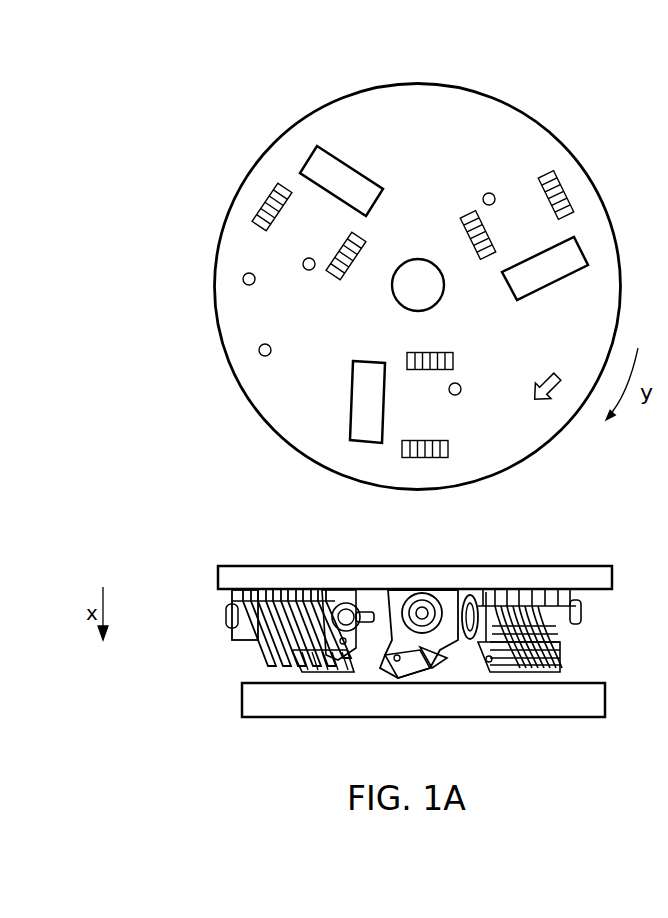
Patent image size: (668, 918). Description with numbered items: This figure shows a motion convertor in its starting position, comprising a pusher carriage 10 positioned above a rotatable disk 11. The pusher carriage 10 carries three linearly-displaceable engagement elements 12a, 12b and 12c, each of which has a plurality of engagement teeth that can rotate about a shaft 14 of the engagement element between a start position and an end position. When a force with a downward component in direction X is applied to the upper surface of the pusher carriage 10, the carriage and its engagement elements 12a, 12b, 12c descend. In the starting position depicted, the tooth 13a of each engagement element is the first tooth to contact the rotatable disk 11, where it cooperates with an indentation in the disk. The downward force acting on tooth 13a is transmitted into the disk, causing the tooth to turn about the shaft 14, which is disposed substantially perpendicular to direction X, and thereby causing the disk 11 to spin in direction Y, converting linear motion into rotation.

The pusher carriage 10 is at (506, 100).
The rotatable disk 11 is at (605, 700).
The engagement element 12a is at (448, 595).
The engagement element 12b is at (532, 677).
The engagement element 12c is at (303, 680).
The engagement tooth 13a is at (273, 668).
The shaft 14 is at (577, 617).